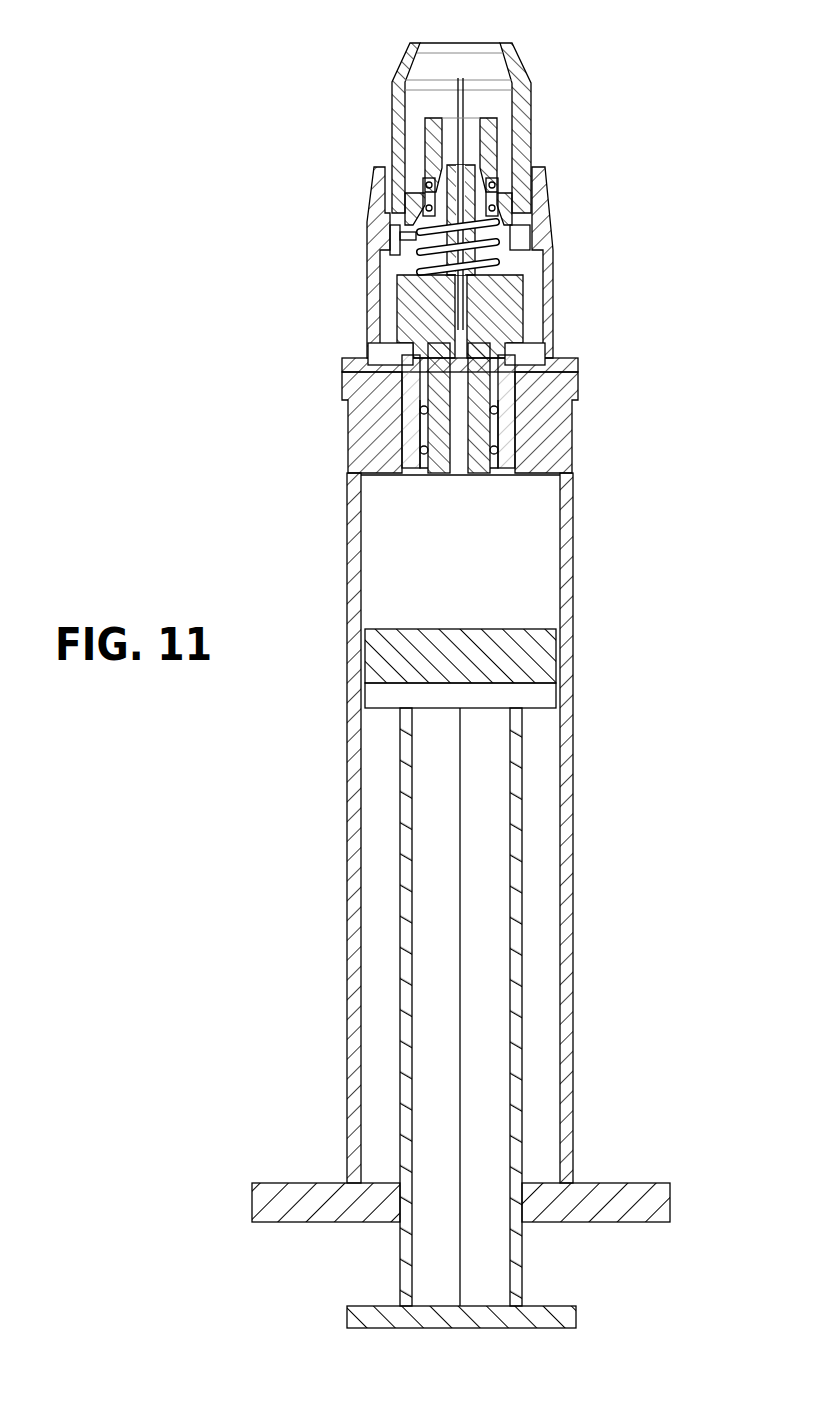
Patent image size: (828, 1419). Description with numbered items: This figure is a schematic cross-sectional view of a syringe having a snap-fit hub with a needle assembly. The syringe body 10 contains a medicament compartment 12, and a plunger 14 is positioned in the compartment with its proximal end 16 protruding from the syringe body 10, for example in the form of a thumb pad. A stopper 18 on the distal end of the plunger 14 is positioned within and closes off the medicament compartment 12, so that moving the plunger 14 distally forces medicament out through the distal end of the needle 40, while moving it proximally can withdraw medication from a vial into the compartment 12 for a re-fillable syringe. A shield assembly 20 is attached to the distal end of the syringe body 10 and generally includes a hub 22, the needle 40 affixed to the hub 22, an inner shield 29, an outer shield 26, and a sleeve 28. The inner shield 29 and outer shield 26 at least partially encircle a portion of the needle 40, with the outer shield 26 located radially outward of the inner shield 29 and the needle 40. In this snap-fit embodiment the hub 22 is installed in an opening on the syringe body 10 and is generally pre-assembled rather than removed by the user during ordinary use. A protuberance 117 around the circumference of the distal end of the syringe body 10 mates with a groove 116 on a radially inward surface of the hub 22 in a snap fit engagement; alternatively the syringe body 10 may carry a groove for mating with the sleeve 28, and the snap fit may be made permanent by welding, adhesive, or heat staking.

The syringe body 10 is at (350, 546).
The medicament compartment 12 is at (473, 558).
The plunger 14 is at (525, 1040).
The proximal end 16 is at (578, 1312).
The stopper 18 is at (553, 668).
The shield assembly 20 is at (240, 187).
The hub 22 is at (410, 322).
The outer shield 26 is at (527, 118).
The sleeve 28 is at (376, 215).
The inner shield 29 is at (487, 150).
The needle 40 is at (458, 78).
The groove 116 is at (422, 450).
The protuberance 117 is at (424, 440).